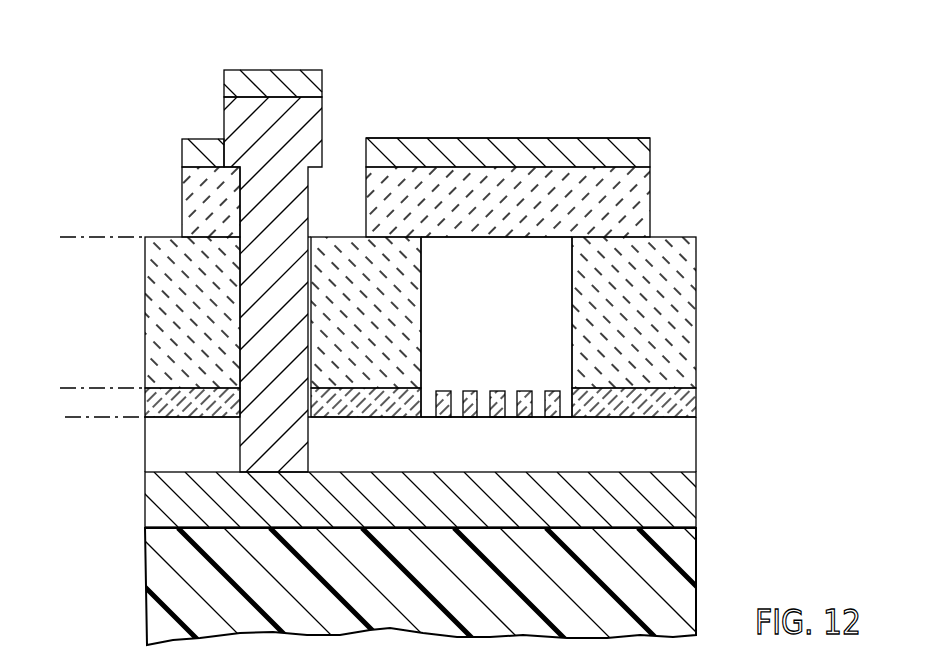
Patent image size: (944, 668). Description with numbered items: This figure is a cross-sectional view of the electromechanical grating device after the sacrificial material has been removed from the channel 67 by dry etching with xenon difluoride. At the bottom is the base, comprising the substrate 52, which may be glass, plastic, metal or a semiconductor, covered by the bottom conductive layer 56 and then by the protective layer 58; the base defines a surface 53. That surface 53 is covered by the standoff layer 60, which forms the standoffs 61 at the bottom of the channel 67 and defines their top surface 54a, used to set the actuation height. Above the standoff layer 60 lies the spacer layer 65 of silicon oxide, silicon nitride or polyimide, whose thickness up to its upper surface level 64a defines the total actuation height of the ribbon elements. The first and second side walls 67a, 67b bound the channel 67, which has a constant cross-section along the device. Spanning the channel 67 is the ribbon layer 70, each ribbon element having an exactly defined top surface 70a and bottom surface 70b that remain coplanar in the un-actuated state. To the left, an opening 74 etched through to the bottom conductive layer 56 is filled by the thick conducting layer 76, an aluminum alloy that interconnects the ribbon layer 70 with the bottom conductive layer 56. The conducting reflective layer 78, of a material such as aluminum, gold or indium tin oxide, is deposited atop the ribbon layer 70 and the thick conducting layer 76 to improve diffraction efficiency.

The substrate 52 is at (685, 563).
The surface 53 is at (98, 418).
The top surface 54a is at (96, 388).
The bottom conductive layer 56 is at (688, 502).
The protective layer 58 is at (685, 445).
The standoff layer 60 is at (690, 403).
The standoffs 61 is at (559, 402).
The upper surface level 64a is at (77, 236).
The spacer layer 65 is at (572, 302).
The channel 67 is at (516, 306).
The first side wall 67a is at (418, 278).
The second side wall 67b is at (696, 283).
The ribbon layer 70 is at (653, 197).
The top surface 70a is at (507, 137).
The bottom surface 70b is at (507, 231).
The opening 74 is at (240, 261).
The thick conducting layer 76 is at (253, 165).
The reflective layer 78 is at (275, 79).